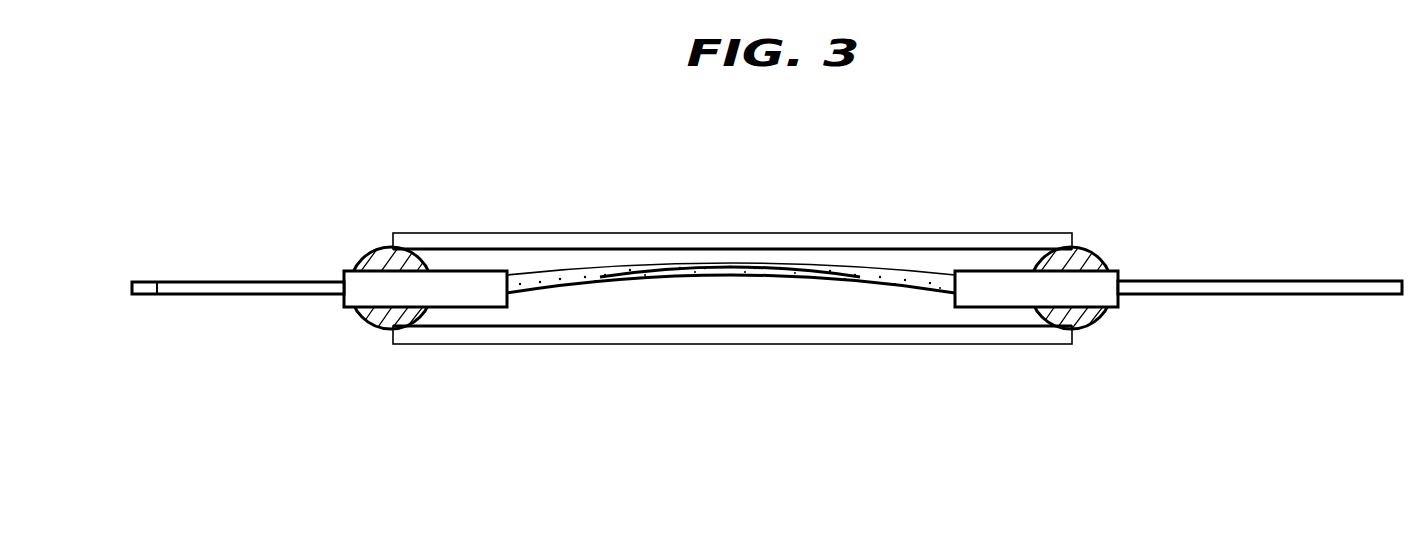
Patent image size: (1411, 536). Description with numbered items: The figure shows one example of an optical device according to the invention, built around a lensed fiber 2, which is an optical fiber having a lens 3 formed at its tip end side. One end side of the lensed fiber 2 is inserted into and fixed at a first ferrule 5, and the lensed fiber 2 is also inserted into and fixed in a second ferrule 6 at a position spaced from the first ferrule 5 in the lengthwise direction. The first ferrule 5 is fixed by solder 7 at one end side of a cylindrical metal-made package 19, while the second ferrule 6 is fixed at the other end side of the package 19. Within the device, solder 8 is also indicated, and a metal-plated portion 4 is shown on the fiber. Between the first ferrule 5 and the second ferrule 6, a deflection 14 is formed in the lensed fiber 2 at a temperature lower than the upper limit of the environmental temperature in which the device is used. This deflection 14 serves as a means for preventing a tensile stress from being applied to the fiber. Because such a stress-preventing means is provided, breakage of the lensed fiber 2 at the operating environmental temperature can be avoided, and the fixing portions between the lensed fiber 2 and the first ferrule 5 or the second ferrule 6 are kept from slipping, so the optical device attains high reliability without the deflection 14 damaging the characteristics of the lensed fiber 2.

The lensed fiber 2 is at (1257, 278).
The lens 3 is at (145, 282).
The metal-plated portion 4 is at (653, 265).
The first ferrule 5 is at (465, 290).
The second ferrule 6 is at (1008, 285).
The solder 7 is at (373, 257).
The solder 8 is at (508, 278).
The deflection 14 is at (750, 275).
The package 19 is at (780, 240).